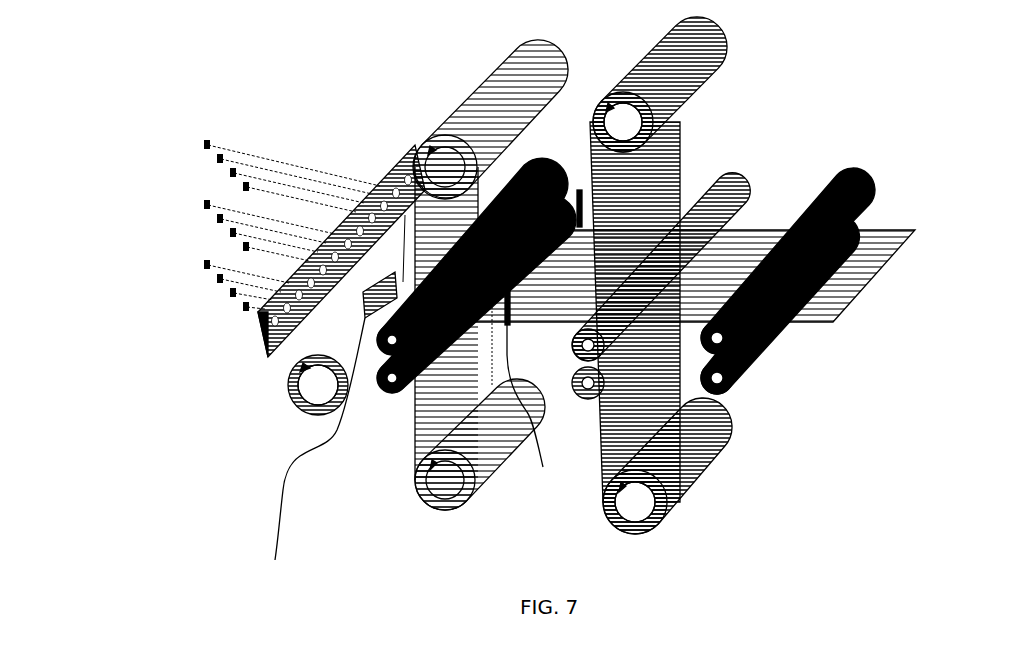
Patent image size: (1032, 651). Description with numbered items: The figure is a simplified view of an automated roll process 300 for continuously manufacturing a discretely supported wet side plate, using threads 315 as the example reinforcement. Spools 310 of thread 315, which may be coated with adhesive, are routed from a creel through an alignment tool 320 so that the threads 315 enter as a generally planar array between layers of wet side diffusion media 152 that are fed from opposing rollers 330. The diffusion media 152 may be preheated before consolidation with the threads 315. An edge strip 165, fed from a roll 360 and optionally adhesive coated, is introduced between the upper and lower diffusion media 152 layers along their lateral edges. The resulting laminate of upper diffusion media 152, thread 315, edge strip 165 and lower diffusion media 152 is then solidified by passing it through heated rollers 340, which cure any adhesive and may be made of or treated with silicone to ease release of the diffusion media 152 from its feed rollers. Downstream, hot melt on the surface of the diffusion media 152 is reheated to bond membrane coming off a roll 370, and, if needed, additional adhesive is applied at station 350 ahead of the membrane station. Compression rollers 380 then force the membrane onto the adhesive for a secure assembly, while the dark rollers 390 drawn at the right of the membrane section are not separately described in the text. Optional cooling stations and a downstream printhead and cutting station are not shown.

The roll process 300 is at (156, 95).
The spools 310 is at (232, 117).
The threads 315 is at (288, 161).
The alignment tool 320 is at (258, 333).
The rollers 330 is at (421, 508).
The heated rollers 340 is at (518, 186).
The adhesive station 350 is at (537, 387).
The roll 360 is at (301, 412).
The roll 370 is at (692, 478).
The compression rollers 380 is at (740, 175).
The rollers 390 is at (863, 175).
The diffusion media 152 is at (440, 386).
The edge strip 165 is at (310, 456).